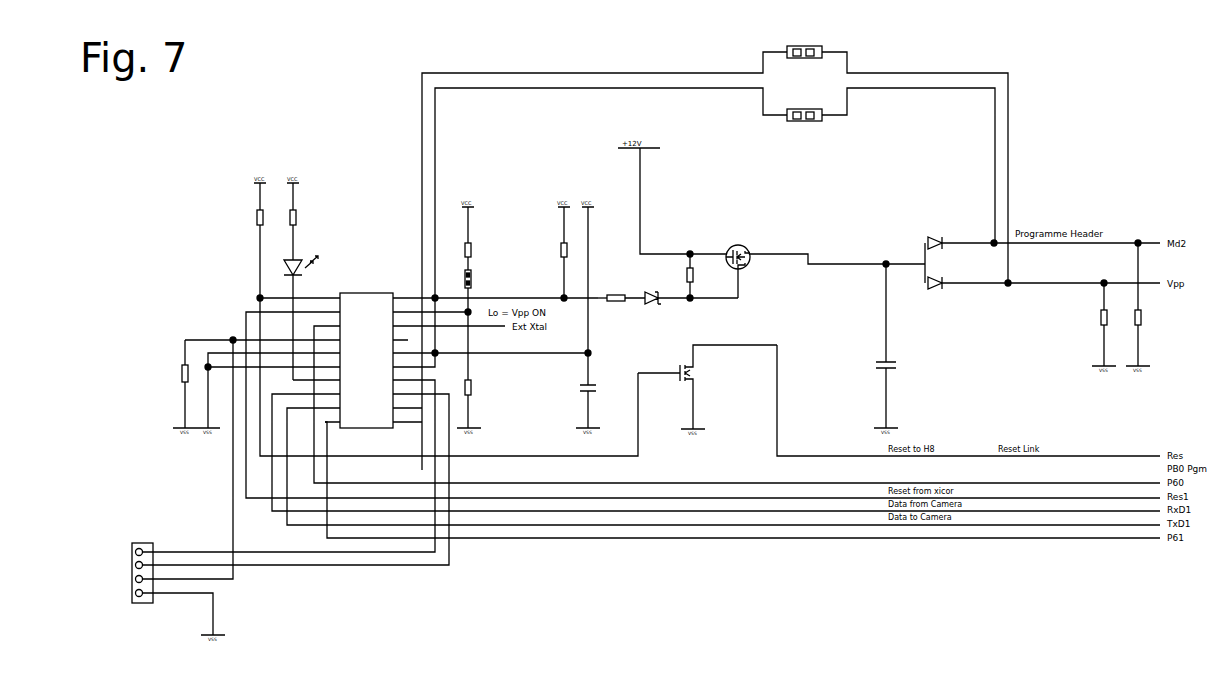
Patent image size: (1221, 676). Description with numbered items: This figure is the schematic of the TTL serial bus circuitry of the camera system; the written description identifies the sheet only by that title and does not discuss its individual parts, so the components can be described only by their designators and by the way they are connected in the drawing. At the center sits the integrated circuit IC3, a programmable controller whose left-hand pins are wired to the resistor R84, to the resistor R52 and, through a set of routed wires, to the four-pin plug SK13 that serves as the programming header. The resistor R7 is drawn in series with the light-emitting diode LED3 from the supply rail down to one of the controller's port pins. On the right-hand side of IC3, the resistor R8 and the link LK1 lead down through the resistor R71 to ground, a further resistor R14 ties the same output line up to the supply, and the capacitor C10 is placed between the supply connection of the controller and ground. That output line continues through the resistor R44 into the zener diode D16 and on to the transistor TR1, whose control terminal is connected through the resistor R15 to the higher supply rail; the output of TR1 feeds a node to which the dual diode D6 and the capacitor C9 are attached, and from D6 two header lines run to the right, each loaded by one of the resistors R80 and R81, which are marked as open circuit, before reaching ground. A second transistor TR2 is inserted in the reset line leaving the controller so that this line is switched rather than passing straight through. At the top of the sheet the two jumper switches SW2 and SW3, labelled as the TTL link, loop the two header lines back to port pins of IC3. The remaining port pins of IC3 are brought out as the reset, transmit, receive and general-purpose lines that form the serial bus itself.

The PIC16F648 microcontroller IC3 is at (366, 369).
The resistor 2K2 R84 is at (247, 254).
The resistor 470R R7 is at (308, 233).
The LED TLMH3100 LED3 is at (311, 318).
The resistor 100K R52 is at (169, 384).
The resistor 1K R8 is at (478, 254).
The link LK1 is at (484, 291).
The resistor 17K R71 is at (480, 370).
The resistor 4K7 R14 is at (551, 266).
The capacitor 100n C10 is at (598, 385).
The resistor 1K R44 is at (611, 310).
The zener diode BZV55-C6V2 D16 is at (658, 310).
The resistor 10K R15 is at (678, 276).
The MOSFET NDS0605 TR1 is at (763, 264).
The MOSFET BSS138N TR2 is at (707, 387).
The dual diode BAT54A D6 is at (1036, 277).
The capacitor 10uF C9 is at (893, 346).
The resistor open circuit R80 is at (1092, 324).
The resistor open circuit R81 is at (1126, 304).
The TTL link switch SW2 is at (798, 43).
The TTL link switch SW3 is at (798, 106).
The 4 pin plug PIC programme header SK13 is at (138, 583).